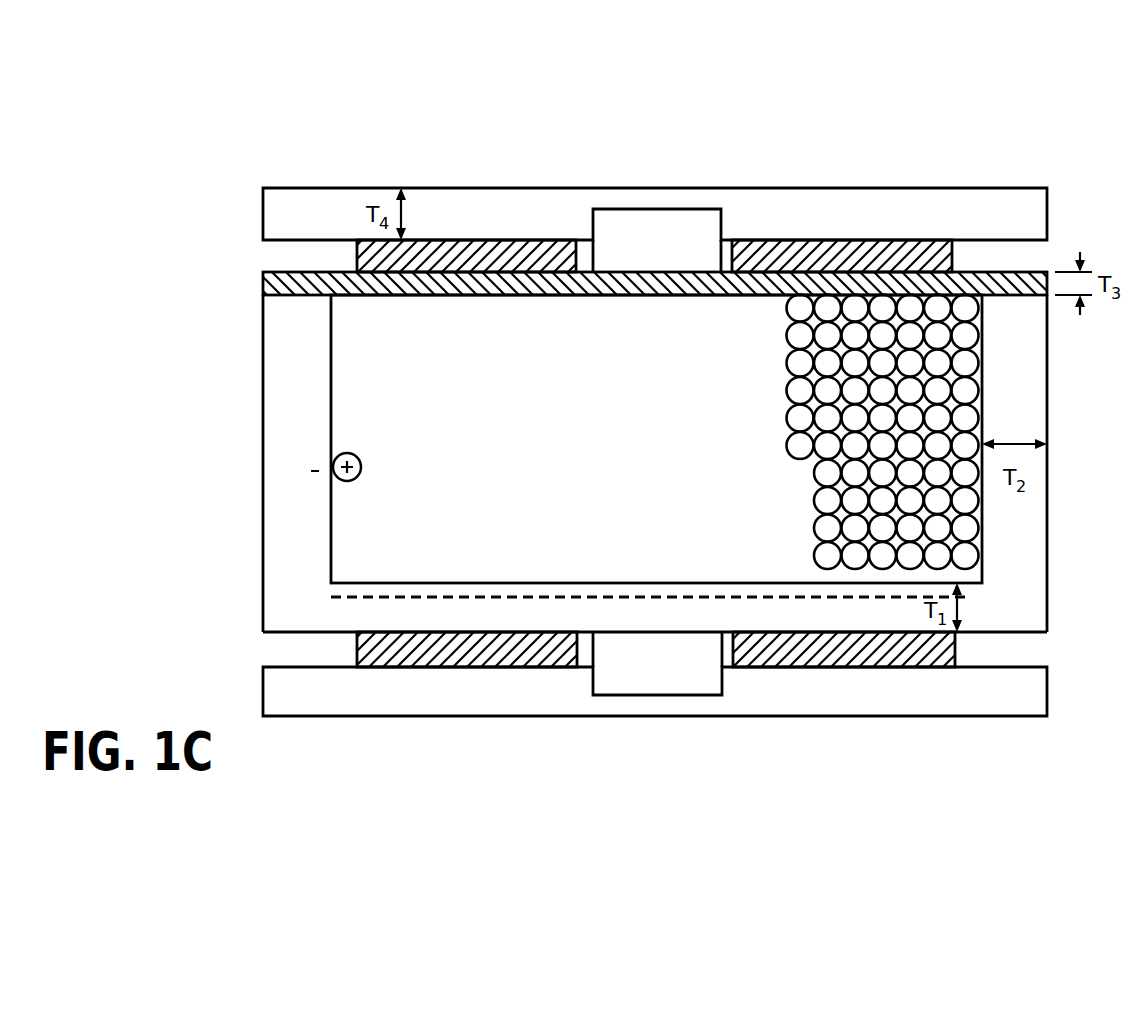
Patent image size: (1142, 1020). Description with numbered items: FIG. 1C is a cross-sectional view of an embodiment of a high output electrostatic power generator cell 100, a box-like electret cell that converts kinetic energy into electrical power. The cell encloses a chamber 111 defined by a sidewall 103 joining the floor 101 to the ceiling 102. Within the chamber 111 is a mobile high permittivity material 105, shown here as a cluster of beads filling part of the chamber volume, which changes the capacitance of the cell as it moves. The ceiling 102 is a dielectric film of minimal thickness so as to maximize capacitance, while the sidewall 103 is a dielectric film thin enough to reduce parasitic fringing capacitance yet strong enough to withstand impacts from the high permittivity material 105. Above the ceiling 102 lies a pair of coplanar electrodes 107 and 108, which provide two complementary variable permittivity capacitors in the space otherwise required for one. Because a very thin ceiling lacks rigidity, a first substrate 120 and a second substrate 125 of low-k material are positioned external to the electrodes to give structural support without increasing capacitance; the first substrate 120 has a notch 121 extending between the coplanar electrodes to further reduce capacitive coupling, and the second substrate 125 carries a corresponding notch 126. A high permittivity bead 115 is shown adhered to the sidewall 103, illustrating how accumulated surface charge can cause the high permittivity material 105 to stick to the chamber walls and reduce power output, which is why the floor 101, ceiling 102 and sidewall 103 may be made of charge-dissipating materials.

The high output electrostatic power generator cell 100 is at (165, 133).
The floor 101 is at (978, 612).
The ceiling 102 is at (1022, 271).
The sidewall 103 is at (1048, 512).
The high permittivity material 105 is at (775, 408).
The electrode 107 is at (455, 240).
The electrode 108 is at (853, 240).
The chamber 111 is at (360, 540).
The high permittivity bead 115 is at (345, 453).
The first substrate 120 is at (507, 697).
The notch 121 is at (618, 693).
The second substrate 125 is at (806, 200).
The top protrusion 126 is at (699, 224).